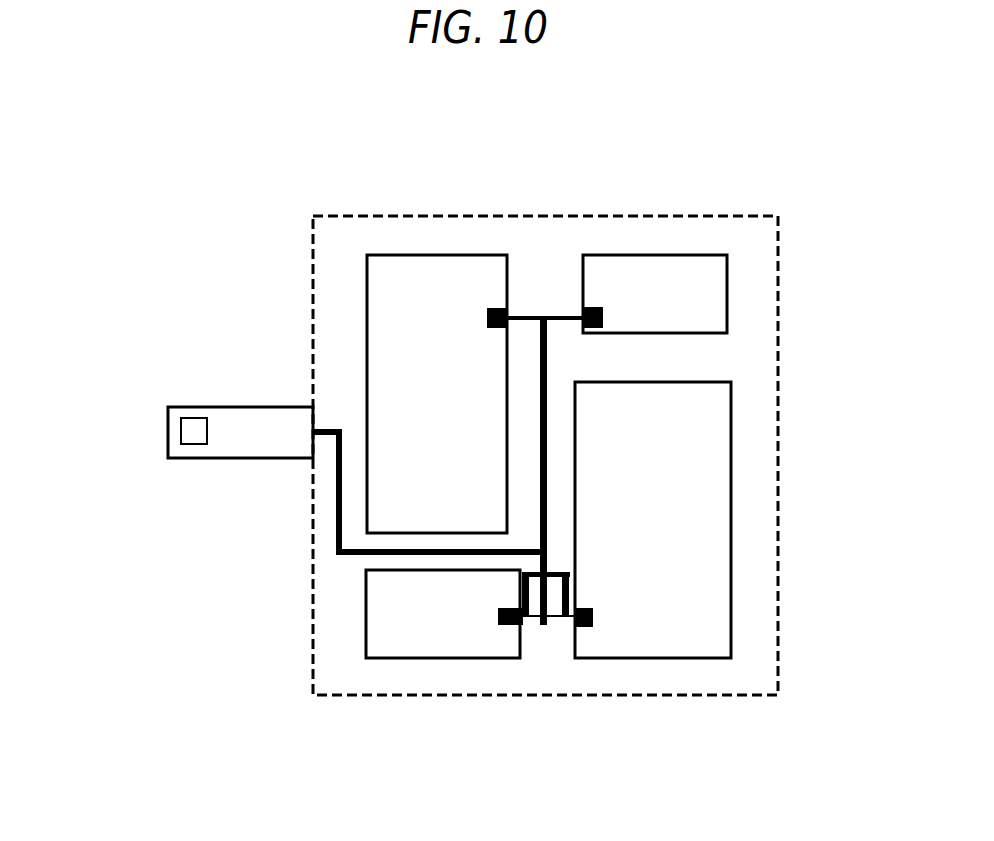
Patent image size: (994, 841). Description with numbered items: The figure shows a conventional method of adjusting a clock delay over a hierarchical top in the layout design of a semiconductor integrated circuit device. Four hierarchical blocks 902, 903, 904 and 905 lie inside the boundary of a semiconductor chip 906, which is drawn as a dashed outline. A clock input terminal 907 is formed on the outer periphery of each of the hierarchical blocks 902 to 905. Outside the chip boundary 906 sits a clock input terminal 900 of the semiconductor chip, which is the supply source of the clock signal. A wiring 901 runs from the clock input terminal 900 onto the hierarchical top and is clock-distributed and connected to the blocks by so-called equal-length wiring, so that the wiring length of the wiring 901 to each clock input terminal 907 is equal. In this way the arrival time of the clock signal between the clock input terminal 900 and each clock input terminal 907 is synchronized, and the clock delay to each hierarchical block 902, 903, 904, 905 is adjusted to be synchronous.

The clock input terminal of a semiconductor chip 900 is at (177, 407).
The wiring 901 is at (335, 430).
The hierarchical block 902 is at (372, 255).
The hierarchical block 903 is at (658, 255).
The hierarchical block 904 is at (727, 382).
The hierarchical block 905 is at (368, 658).
The boundary of a semiconductor chip 906 is at (767, 215).
The clock input terminal 907 is at (583, 625).